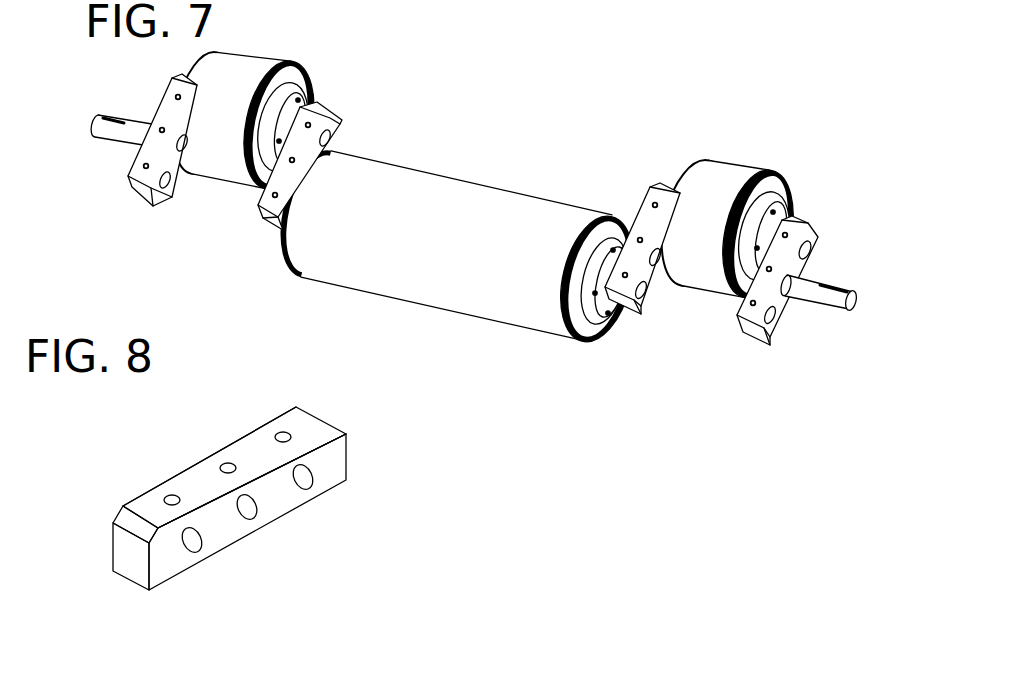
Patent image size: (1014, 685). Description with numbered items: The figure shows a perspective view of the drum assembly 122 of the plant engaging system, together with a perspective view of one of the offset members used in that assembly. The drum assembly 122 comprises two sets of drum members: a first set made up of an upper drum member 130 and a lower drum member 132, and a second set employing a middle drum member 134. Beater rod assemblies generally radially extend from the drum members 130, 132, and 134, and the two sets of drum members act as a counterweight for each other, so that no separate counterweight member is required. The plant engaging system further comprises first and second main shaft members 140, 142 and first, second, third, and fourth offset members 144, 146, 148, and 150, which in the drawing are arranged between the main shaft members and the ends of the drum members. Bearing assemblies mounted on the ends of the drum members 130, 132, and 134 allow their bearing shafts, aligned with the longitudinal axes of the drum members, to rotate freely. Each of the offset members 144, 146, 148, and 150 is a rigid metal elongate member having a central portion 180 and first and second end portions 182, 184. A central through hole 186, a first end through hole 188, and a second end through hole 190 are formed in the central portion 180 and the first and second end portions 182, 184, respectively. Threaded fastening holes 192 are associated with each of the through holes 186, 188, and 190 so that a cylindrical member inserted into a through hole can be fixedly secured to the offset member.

In FIG. 7, the drum assembly 122 is at (624, 134).
In FIG. 7, the upper drum member 130 is at (265, 68).
In FIG. 7, the lower drum member 132 is at (725, 175).
In FIG. 7, the middle drum member 134 is at (450, 188).
In FIG. 7, the first main shaft member 140 is at (127, 140).
In FIG. 8, the first main shaft member 140 is at (242, 484).
In FIG. 7, the second main shaft member 142 is at (808, 293).
In FIG. 7, the first offset member 144 is at (143, 197).
In FIG. 7, the second offset member 146 is at (266, 232).
In FIG. 7, the third offset member 148 is at (627, 312).
In FIG. 7, the fourth offset member 150 is at (752, 338).
In FIG. 8, the central portion 180 is at (200, 450).
In FIG. 8, the first end portion 182 is at (270, 402).
In FIG. 8, the second end portion 184 is at (120, 493).
In FIG. 8, the central through hole 186 is at (250, 513).
In FIG. 8, the first end through hole 188 is at (304, 482).
In FIG. 8, the second end through hole 190 is at (192, 546).
In FIG. 8, the threaded fastening holes 192 is at (170, 496).